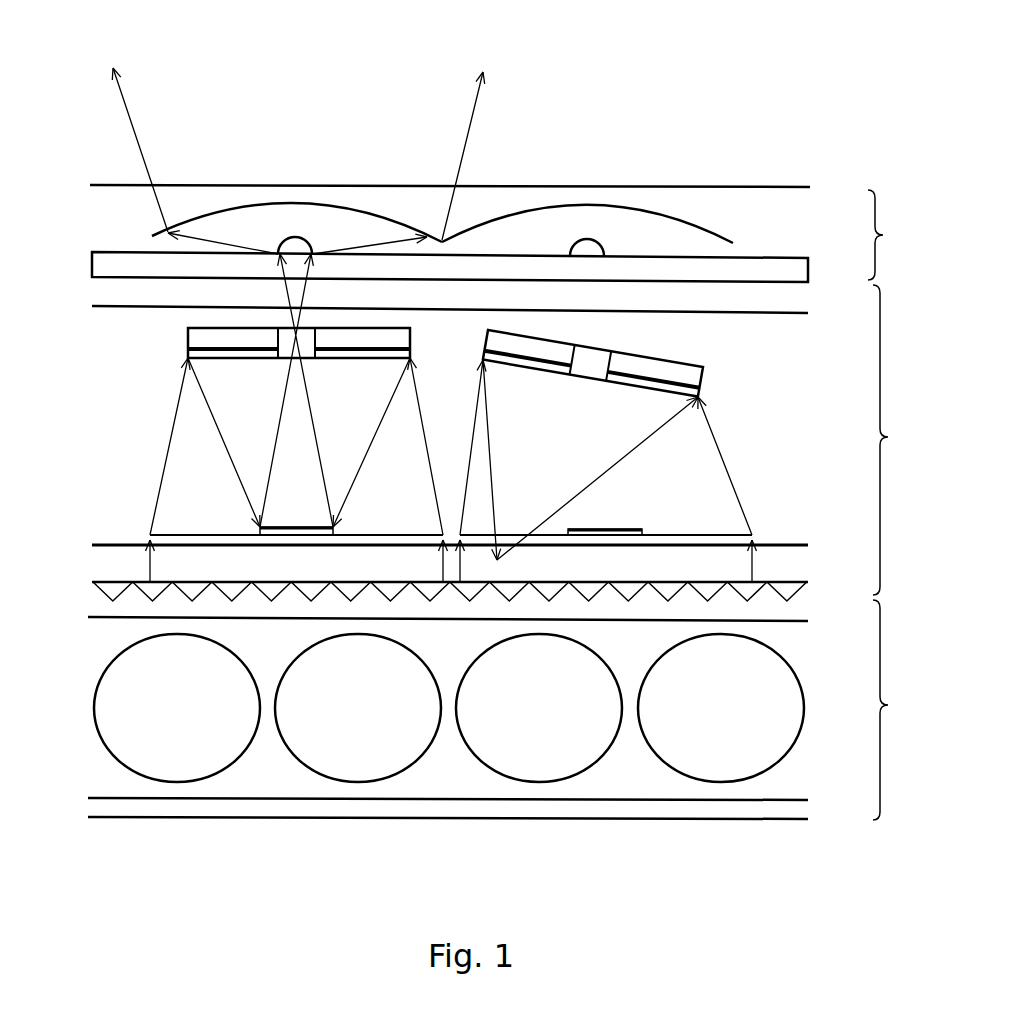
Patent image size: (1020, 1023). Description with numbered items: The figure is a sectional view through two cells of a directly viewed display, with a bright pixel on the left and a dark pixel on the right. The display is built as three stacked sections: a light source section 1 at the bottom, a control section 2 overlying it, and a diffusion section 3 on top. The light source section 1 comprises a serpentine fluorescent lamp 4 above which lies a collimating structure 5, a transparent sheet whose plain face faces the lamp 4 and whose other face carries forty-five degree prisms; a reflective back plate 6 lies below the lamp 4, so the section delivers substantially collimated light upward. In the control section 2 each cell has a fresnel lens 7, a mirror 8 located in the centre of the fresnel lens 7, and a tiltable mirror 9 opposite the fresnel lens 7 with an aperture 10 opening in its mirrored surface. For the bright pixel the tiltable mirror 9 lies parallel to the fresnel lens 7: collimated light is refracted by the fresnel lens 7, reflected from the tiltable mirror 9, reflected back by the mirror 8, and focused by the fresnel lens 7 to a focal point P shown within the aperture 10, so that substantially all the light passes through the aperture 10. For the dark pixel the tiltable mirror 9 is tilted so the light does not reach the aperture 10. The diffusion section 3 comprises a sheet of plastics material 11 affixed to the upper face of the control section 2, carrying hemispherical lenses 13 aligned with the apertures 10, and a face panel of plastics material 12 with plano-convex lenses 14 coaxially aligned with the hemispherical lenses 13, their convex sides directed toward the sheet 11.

The light source section 1 is at (890, 710).
The control section 2 is at (895, 440).
The diffusion section 3 is at (883, 235).
The serpentine fluorescent lamp 4 is at (223, 747).
The collimating structure 5 is at (797, 617).
The reflective back plate 6 is at (290, 812).
The fresnel lens 7 is at (387, 541).
The mirror 8 is at (300, 527).
The tiltable mirror 9 is at (366, 355).
The aperture 10 is at (310, 350).
The sheet of plastics material 11 is at (786, 268).
The face panel of plastics material 12 is at (773, 210).
The hemispherical lens 13 is at (298, 245).
The plano-convex lens 14 is at (307, 198).
The focal point P is at (290, 348).